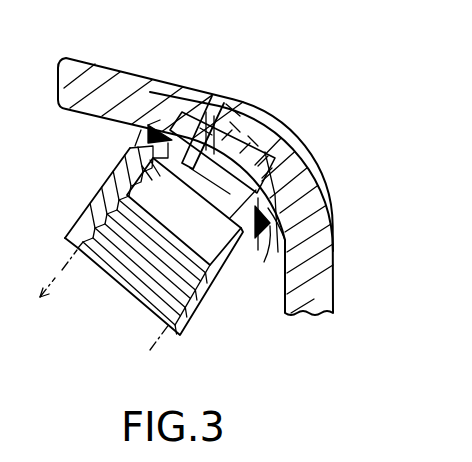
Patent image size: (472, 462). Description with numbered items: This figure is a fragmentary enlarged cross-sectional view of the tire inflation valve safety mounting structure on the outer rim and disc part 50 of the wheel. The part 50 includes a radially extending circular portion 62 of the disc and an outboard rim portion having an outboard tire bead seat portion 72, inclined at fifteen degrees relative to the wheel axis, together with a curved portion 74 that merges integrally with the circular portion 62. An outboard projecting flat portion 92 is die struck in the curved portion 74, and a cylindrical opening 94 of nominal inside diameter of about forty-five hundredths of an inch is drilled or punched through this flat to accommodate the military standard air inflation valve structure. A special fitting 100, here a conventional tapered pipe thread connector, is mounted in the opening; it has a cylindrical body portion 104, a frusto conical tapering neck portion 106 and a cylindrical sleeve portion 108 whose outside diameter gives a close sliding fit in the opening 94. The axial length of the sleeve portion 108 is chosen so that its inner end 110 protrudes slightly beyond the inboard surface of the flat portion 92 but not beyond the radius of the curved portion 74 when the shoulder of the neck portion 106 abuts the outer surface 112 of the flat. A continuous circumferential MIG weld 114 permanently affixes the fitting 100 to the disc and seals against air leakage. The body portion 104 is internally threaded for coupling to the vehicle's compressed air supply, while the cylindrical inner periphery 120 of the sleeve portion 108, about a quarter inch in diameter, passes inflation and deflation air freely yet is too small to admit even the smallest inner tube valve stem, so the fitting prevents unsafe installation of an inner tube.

The outer rim and disc part 50 is at (63, 109).
The radially extending circular portion 62 is at (325, 280).
The outboard tire bead seat portion 72 is at (105, 70).
The curved portion 74 is at (307, 156).
The outboard projecting flat portion 92 is at (312, 172).
The cylindrical opening 94 is at (200, 112).
The fitting 100 is at (102, 183).
The cylindrical body portion 104 is at (212, 293).
The frusto conical tapering neck portion 106 is at (147, 143).
The cylindrical sleeve portion 108 is at (235, 107).
The inner end 110 is at (262, 120).
The outer surface 112 is at (267, 243).
The continuous circumferential MIG weld 114 is at (152, 124).
The cylindrical inner periphery 120 is at (280, 130).